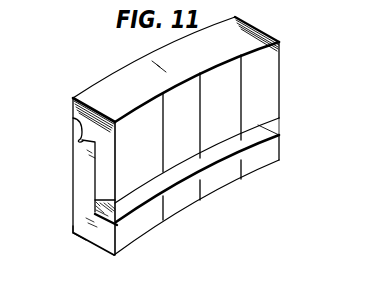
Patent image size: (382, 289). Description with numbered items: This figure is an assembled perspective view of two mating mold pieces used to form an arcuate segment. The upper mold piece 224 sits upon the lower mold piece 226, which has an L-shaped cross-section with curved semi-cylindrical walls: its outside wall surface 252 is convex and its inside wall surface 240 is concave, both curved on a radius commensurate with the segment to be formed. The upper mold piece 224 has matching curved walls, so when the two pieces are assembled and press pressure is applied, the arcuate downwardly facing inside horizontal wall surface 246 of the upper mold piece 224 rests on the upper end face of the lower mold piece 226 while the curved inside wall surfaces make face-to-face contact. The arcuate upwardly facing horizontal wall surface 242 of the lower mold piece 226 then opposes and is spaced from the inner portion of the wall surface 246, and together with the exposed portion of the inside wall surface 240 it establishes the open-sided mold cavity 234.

The upper mold piece 224 is at (222, 113).
The lower mold piece 226 is at (88, 202).
The open-sided mold cavity 234 is at (283, 125).
The inside wall surface 240 is at (96, 175).
The upwardly facing horizontal wall surface 242 is at (166, 179).
The downwardly facing inside horizontal wall surface 246 is at (73, 118).
The outside wall surface 252 is at (75, 232).